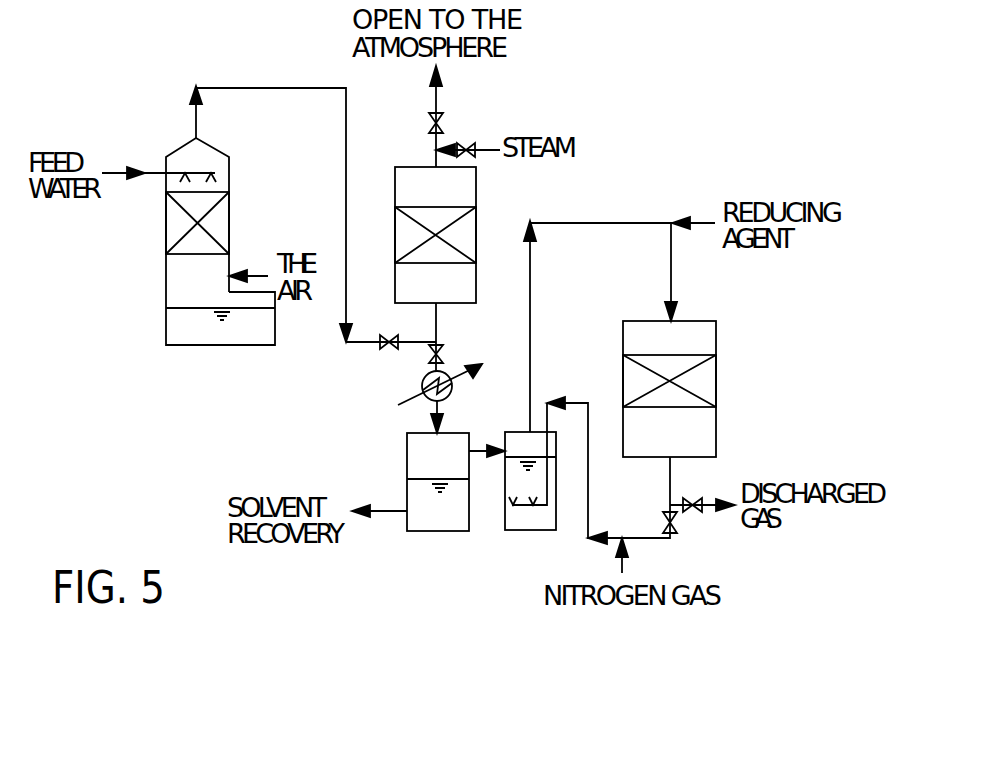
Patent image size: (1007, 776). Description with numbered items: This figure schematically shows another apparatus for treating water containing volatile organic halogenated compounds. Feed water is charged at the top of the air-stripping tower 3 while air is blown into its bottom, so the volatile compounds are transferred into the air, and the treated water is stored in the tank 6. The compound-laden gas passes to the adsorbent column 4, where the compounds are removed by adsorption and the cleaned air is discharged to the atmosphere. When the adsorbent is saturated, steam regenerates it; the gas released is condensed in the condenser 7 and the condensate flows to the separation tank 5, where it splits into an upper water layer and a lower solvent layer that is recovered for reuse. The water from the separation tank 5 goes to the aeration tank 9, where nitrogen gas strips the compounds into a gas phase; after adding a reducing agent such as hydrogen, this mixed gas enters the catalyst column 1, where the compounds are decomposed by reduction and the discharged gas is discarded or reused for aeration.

The catalyst column 1 is at (705, 388).
The air-stripping tower 3 is at (166, 225).
The adsorbent column 4 is at (463, 238).
The separation tank 5 is at (420, 452).
The tank 6 is at (175, 325).
The condenser 7 is at (453, 398).
The aeration tank 9 is at (524, 520).